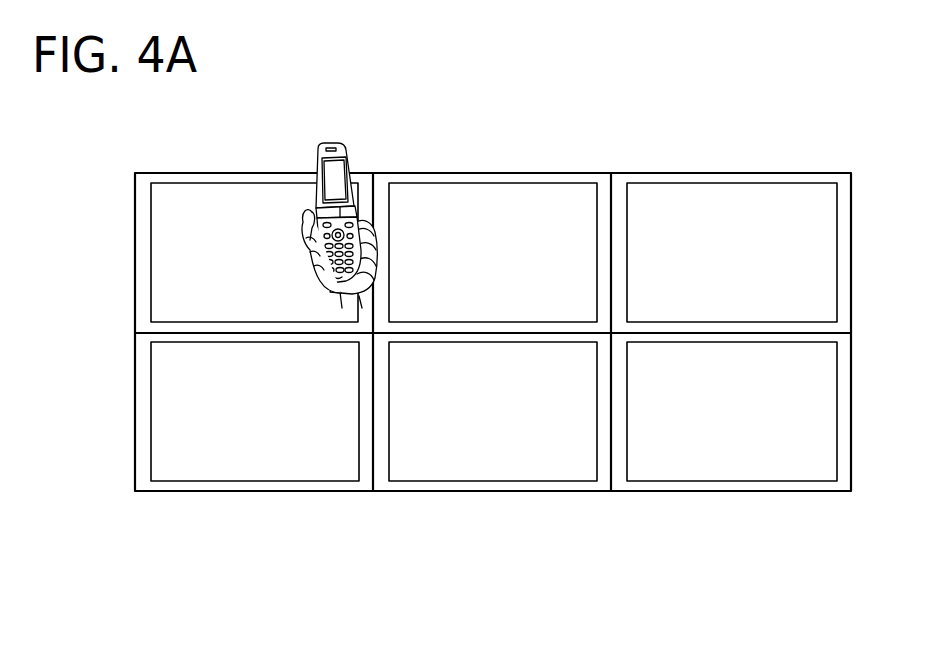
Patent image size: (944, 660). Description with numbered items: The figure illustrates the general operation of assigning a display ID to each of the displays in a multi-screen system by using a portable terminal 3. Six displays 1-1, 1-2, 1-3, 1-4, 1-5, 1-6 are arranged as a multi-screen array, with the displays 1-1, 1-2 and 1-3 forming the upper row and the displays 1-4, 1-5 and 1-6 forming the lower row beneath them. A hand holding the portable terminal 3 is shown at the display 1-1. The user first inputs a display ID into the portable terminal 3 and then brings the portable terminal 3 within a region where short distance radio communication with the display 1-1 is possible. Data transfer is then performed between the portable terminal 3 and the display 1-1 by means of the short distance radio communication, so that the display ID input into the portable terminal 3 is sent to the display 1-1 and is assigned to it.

The display 1-1 is at (258, 200).
The display 1-2 is at (495, 200).
The display 1-3 is at (733, 200).
The display 1-4 is at (259, 462).
The display 1-5 is at (497, 462).
The display 1-6 is at (737, 462).
The portable terminal 3 is at (343, 168).